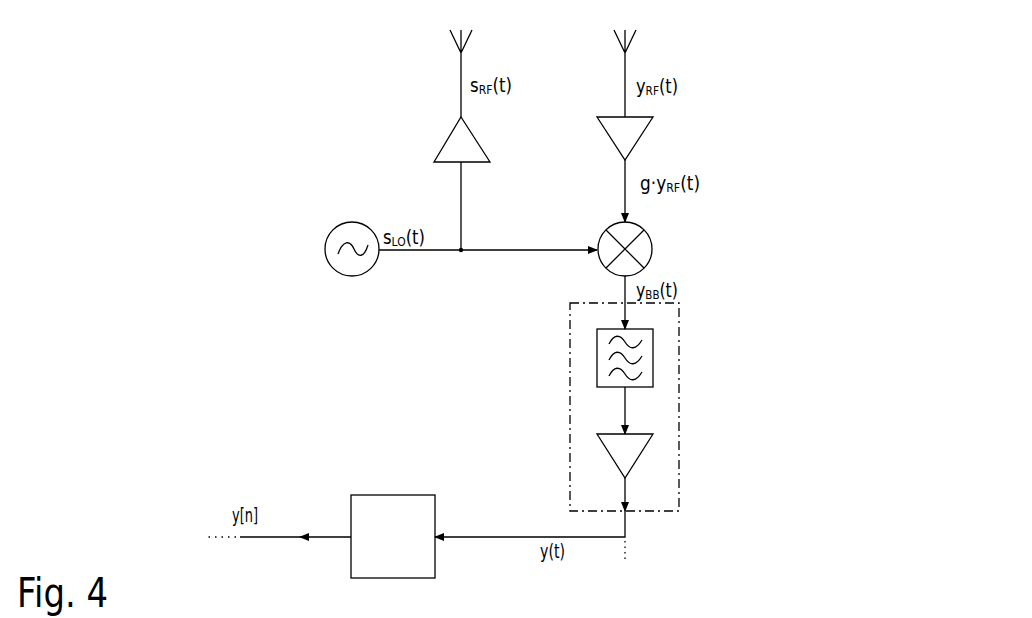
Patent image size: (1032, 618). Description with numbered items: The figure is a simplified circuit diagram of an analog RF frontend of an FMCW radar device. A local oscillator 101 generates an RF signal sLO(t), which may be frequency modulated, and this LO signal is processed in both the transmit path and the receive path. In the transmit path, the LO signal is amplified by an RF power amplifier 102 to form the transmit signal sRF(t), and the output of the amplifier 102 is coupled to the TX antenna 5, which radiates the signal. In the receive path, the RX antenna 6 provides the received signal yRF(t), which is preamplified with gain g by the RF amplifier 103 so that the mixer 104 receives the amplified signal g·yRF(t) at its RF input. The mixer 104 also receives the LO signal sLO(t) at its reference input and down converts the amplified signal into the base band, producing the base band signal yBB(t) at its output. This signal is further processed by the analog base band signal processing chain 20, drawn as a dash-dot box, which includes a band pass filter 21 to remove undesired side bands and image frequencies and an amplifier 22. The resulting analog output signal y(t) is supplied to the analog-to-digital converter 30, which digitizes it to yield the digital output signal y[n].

The TX antenna 5 is at (390, 73).
The RX antenna 6 is at (697, 73).
The RF power amplifier 102 is at (445, 145).
The RF amplifier 103 is at (647, 130).
The local oscillator 101 is at (326, 253).
The mixer 104 is at (653, 243).
The analog base band signal processing chain 20 is at (680, 382).
The band pass filter 21 is at (597, 361).
The amplifier 22 is at (608, 456).
The analog-to-digital converter 30 is at (393, 536).